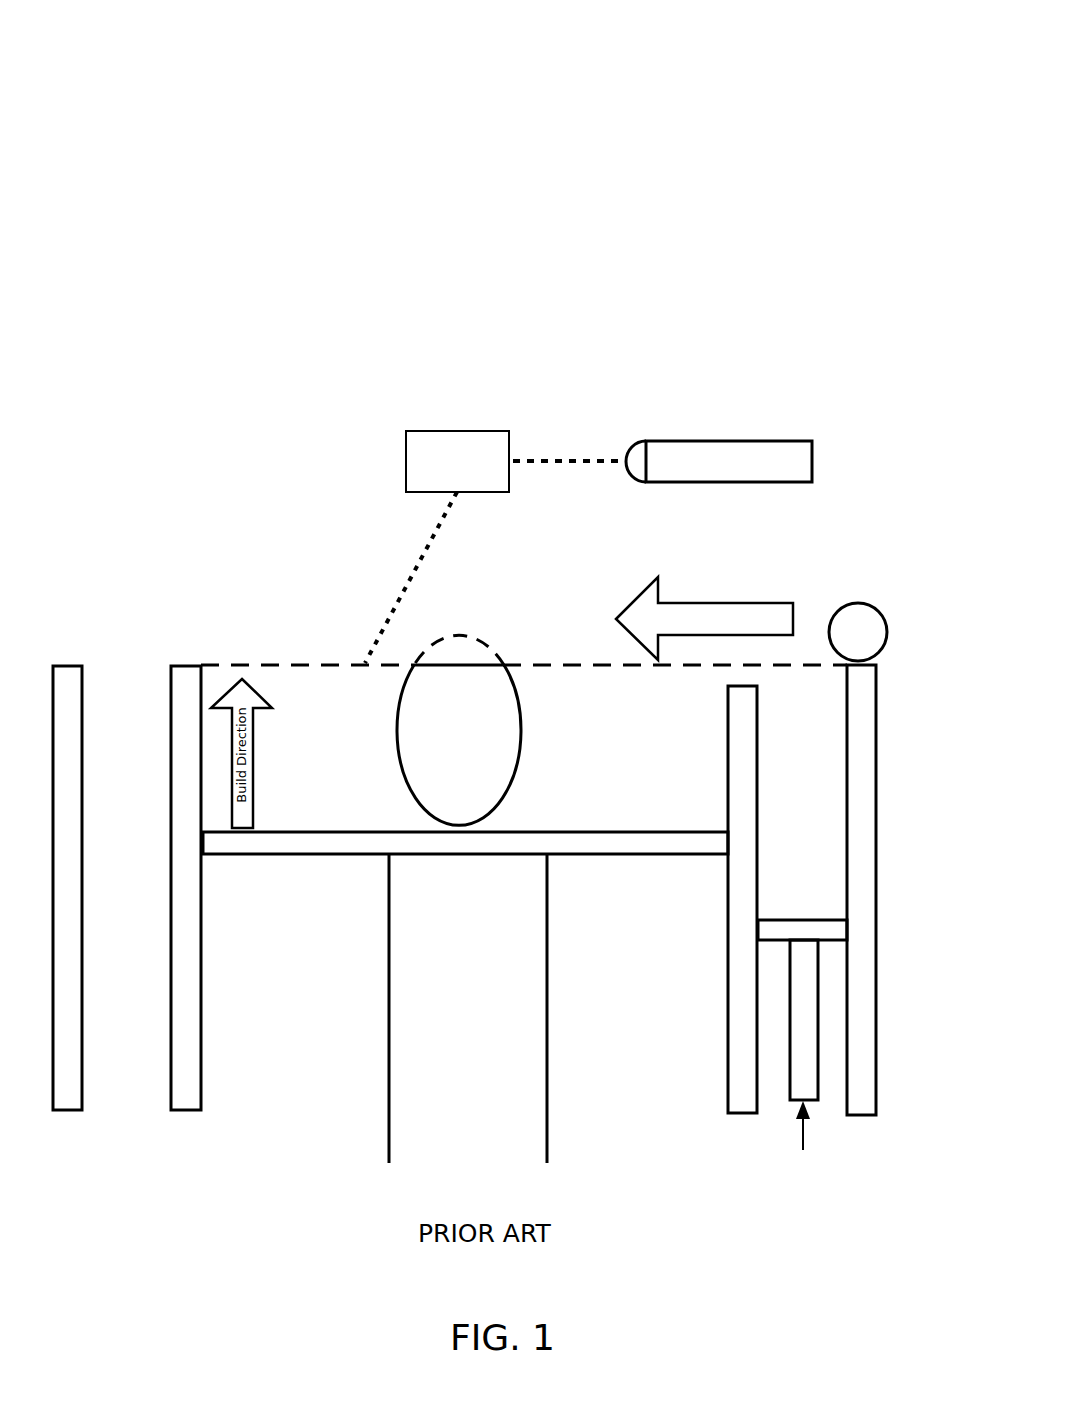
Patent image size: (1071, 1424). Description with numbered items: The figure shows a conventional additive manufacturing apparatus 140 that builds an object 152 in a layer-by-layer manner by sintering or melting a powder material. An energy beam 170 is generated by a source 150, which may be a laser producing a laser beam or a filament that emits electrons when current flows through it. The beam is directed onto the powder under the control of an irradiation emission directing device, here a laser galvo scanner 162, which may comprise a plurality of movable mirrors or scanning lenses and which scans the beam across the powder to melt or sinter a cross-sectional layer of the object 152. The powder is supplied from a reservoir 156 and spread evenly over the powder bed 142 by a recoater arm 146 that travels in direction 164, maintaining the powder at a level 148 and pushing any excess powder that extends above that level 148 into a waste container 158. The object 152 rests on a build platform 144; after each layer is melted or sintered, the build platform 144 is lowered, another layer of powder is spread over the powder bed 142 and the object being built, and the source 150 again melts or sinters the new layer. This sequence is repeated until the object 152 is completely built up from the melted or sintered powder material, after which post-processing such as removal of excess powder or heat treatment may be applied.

The apparatus 140 is at (143, 47).
The powder bed 142 is at (610, 725).
The build platform 144 is at (673, 831).
The recoater arm 146 is at (858, 603).
The powder level 148 is at (268, 665).
The source 150 is at (673, 441).
The object 152 is at (398, 745).
The reservoir 156 is at (810, 768).
The waste container 158 is at (152, 1000).
The laser galvo scanner 162 is at (457, 431).
The direction 164 is at (637, 597).
The energy beam 170 is at (410, 578).